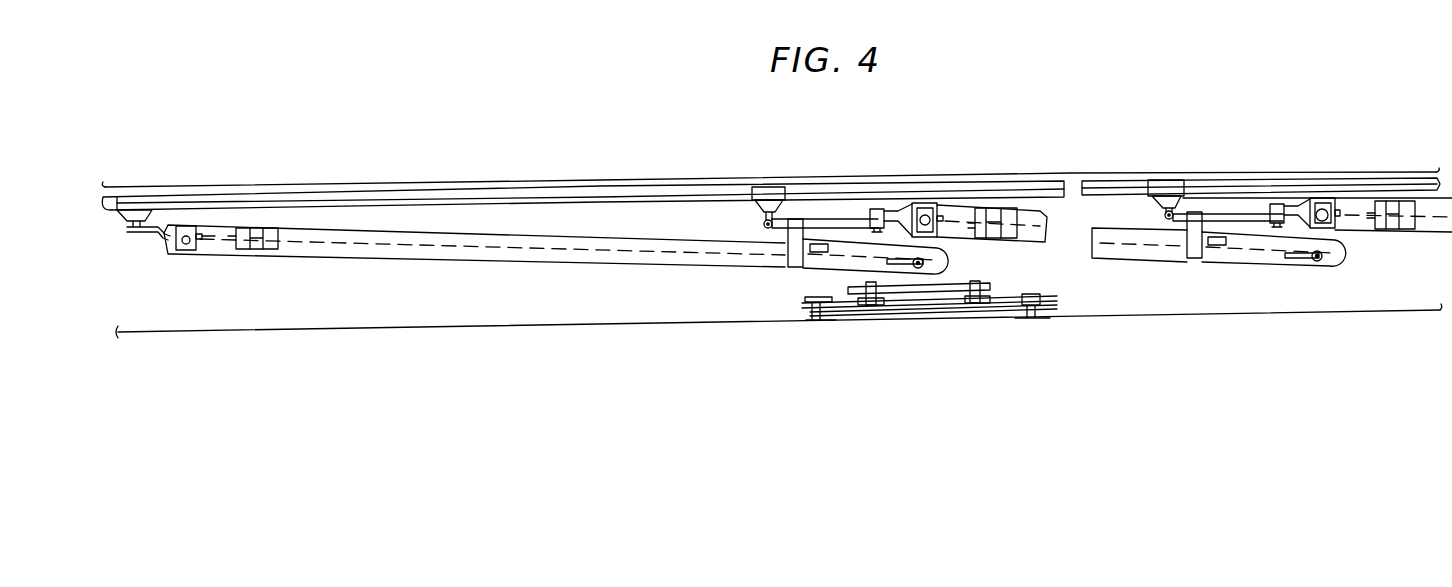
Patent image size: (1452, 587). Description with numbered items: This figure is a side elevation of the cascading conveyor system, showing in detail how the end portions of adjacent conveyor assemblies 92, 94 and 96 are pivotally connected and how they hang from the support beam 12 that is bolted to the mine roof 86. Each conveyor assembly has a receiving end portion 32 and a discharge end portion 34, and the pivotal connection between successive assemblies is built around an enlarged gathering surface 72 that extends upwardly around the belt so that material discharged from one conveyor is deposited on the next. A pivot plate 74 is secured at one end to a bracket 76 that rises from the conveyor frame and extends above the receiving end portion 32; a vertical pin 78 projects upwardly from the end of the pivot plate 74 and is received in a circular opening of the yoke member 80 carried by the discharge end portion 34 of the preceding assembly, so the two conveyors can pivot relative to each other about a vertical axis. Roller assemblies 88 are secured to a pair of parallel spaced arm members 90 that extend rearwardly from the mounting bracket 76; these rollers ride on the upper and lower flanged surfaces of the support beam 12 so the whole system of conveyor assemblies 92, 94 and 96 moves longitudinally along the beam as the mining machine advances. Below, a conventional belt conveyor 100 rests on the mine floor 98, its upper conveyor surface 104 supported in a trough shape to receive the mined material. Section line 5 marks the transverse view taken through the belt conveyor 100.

The section line 5- 5 is at (1345, 146).
The support beam 12 is at (523, 195).
The receiving end portion 32 is at (853, 232).
The discharge end portion 34 is at (218, 222).
The gathering surface 72 is at (933, 248).
The pivot plate 74 is at (821, 221).
The bracket 76 is at (793, 247).
The vertical pin 78 is at (877, 208).
The yoke member 80 is at (896, 213).
The mine roof 86 is at (1406, 177).
The roller assemblies 88 is at (745, 185).
The arm members 90 is at (764, 225).
The conveyor assembly 92 is at (547, 254).
The conveyor assembly 94 is at (1140, 255).
The conveyor assembly 96 is at (1408, 238).
The mine floor 98 is at (630, 318).
The conveyor belt 100 is at (989, 318).
The upper conveyor surface 104 is at (957, 290).